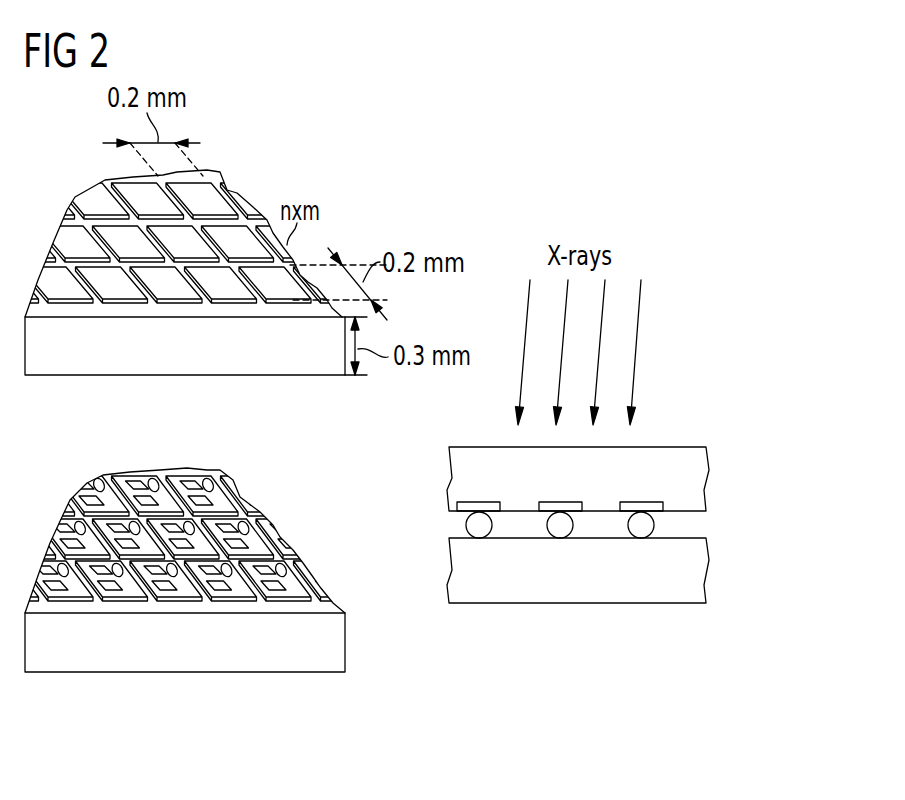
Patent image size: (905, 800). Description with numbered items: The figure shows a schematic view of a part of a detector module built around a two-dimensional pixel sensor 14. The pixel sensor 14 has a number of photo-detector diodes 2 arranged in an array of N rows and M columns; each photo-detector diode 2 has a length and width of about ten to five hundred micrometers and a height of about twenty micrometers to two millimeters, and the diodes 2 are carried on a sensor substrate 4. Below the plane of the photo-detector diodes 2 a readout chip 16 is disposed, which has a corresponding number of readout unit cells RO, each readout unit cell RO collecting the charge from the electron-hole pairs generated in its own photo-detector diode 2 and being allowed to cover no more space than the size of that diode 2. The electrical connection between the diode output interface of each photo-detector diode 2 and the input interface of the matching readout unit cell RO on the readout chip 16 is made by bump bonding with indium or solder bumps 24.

The photo-detector diode 2 is at (642, 505).
The sensor substrate / converter layer 4 is at (122, 367).
The two-dimensional pixel sensor 14 is at (262, 168).
The readout chip 16 is at (456, 571).
The bumps 24 is at (467, 525).
The readout unit cell RO is at (200, 498).